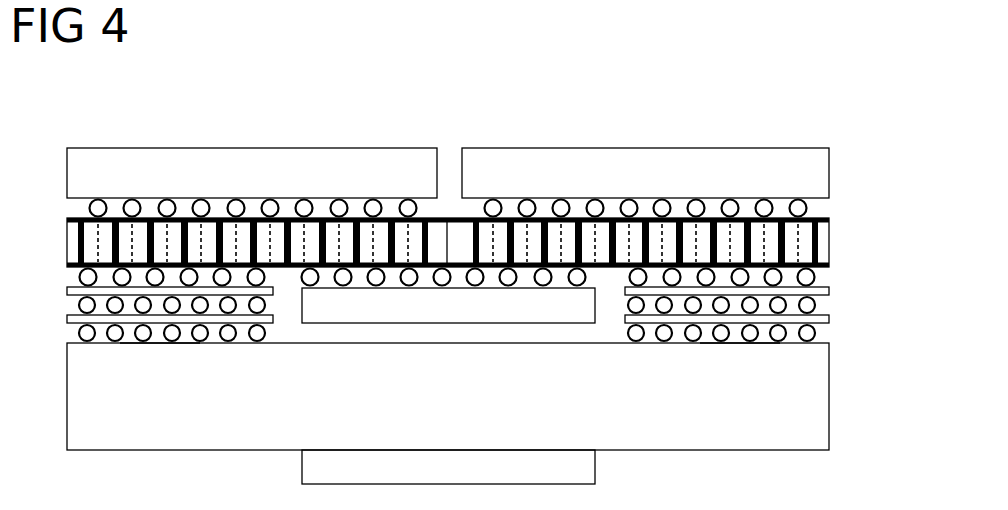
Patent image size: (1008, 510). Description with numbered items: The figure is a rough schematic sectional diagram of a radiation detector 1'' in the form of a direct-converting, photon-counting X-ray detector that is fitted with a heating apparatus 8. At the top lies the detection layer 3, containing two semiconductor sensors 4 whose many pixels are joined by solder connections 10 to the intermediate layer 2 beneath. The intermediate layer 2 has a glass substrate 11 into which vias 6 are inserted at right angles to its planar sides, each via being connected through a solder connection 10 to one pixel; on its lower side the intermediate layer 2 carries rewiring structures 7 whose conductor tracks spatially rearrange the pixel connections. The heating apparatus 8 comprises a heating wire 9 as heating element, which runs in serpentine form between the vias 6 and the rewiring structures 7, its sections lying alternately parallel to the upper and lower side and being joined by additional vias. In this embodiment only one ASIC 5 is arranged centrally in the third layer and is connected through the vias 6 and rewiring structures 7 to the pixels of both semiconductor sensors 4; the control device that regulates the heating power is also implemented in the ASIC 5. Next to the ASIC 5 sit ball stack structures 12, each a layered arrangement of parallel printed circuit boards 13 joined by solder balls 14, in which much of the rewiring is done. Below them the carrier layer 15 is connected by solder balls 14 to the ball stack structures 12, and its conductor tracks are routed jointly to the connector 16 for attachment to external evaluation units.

The radiation detector 1'' is at (463, 263).
The intermediate layer 2 is at (863, 231).
The detection layer 3 is at (860, 171).
The semiconductor sensor 4 is at (312, 148).
The ASIC 5 is at (415, 318).
The via 6 is at (812, 240).
The rewiring structure 7 is at (812, 276).
The heating apparatus 8 is at (62, 250).
The heating wire 9 is at (68, 235).
The solder connection 10 is at (133, 198).
The substrate 11 is at (440, 233).
The ball stack structure 12 is at (154, 354).
The printed circuit board 13 is at (829, 318).
The solder ball 14 is at (803, 313).
The carrier layer 15 is at (758, 438).
The connector 16 is at (584, 464).